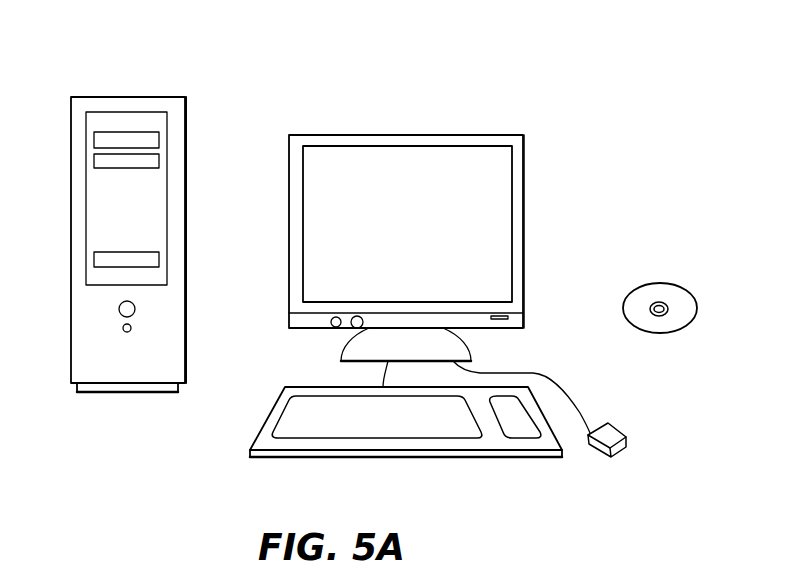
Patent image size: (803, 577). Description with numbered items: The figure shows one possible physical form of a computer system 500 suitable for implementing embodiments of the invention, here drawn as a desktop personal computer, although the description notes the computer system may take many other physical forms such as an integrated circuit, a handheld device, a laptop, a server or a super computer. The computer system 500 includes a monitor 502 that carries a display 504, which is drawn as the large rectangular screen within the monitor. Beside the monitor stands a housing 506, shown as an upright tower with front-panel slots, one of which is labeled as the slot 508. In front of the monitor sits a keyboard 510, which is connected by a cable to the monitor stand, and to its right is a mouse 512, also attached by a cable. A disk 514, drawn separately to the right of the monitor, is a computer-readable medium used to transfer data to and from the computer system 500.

The computer system 500 is at (436, 107).
The monitor 502 is at (523, 260).
The display 504 is at (478, 205).
The housing 506 is at (142, 97).
The drive slot / media drive 508 is at (150, 261).
The keyboard 510 is at (297, 442).
The mouse 512 is at (602, 443).
The disk 514 is at (668, 337).